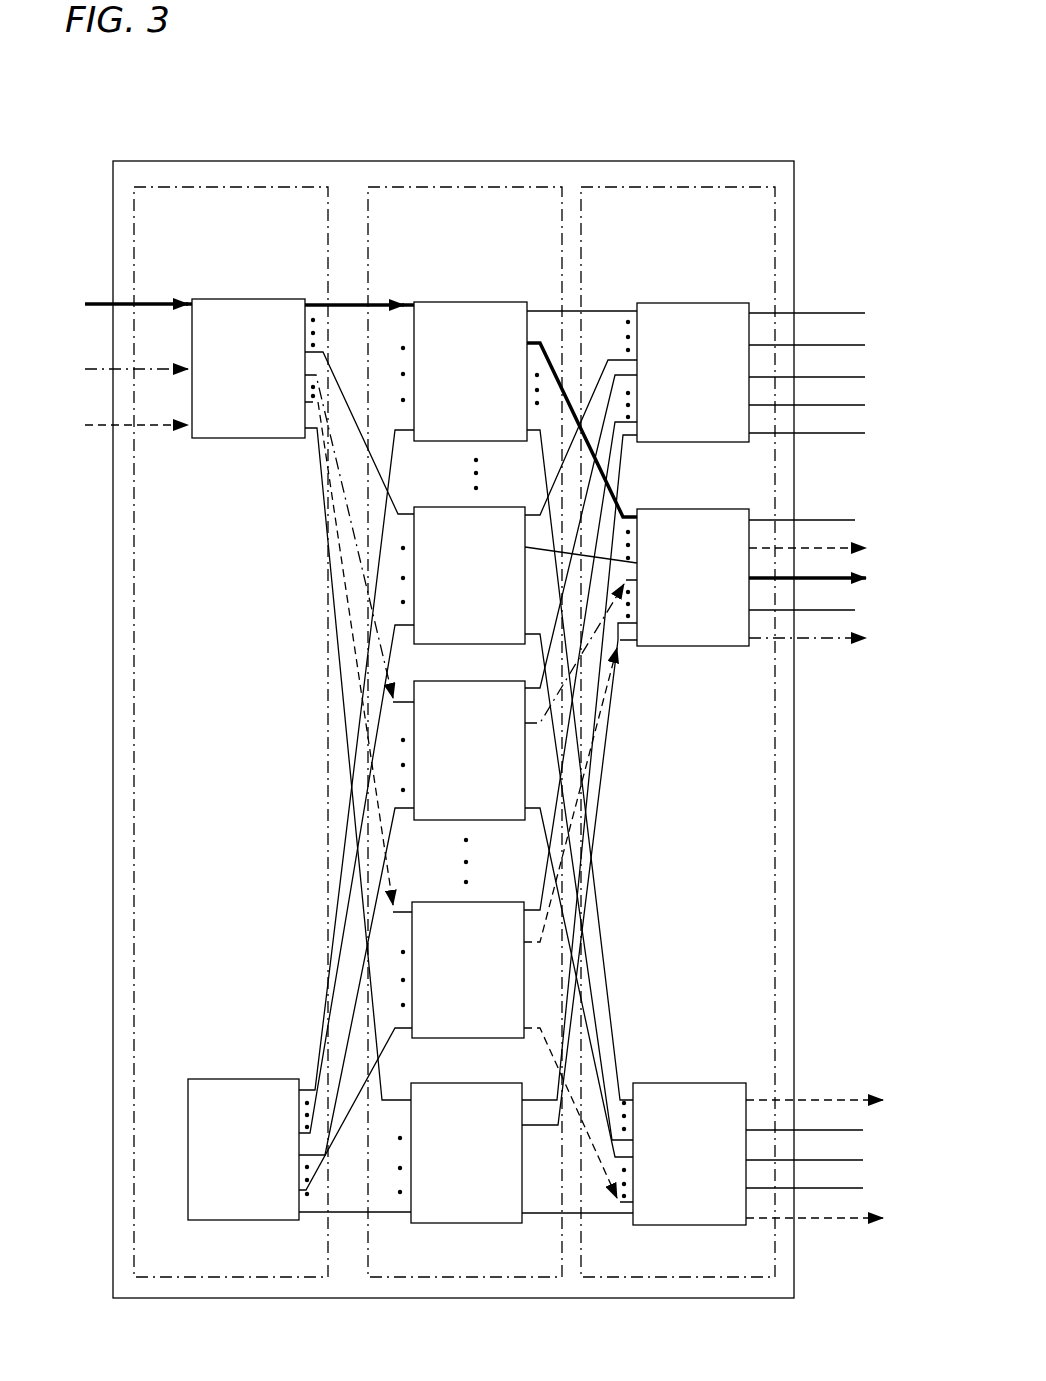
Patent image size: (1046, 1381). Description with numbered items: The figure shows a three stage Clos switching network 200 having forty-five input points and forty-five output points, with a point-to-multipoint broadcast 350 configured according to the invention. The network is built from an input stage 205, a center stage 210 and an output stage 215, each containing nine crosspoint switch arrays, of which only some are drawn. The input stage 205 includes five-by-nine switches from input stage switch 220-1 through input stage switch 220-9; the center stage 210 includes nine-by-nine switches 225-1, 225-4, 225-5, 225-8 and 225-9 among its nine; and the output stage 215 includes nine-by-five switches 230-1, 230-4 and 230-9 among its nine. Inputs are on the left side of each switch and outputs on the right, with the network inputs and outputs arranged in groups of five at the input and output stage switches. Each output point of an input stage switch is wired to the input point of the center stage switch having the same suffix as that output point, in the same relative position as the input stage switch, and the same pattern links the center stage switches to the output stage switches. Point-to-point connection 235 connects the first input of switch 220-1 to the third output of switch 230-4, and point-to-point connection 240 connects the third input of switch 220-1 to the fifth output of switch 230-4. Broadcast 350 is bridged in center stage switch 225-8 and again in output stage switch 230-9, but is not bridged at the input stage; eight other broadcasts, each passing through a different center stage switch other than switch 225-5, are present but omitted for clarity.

The Clos switching network 200 is at (765, 161).
The input stage 205 is at (258, 186).
The center stage 210 is at (475, 186).
The output stage 215 is at (655, 186).
The input stage switch 220-1 is at (270, 299).
The input stage switch 220-9 is at (264, 1079).
The center stage switch 225-1 is at (478, 302).
The center stage switch 225-4 is at (438, 507).
The center stage switch 225-5 is at (500, 820).
The center stage switch 225-8 is at (428, 902).
The center stage switch 225-9 is at (485, 1223).
The output stage switch 230-1 is at (703, 303).
The output stage switch 230-4 is at (700, 509).
The output stage switch 230-9 is at (468, 762).
The point-to-point connection 235 is at (97, 298).
The point-to-point connection 240 is at (90, 367).
The broadcast 350 is at (88, 424).